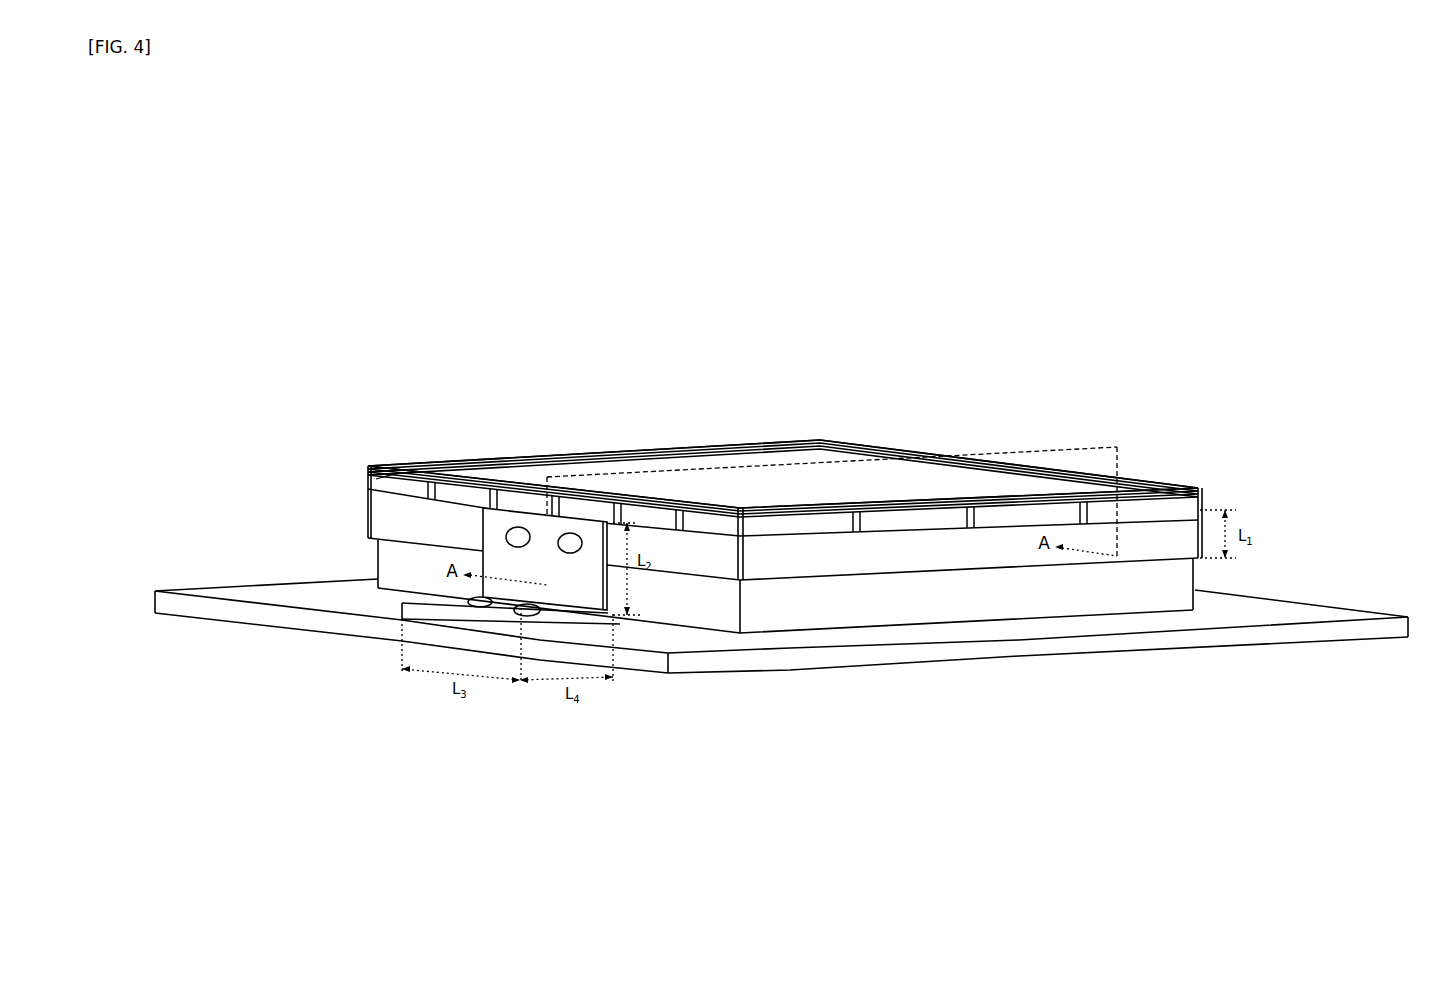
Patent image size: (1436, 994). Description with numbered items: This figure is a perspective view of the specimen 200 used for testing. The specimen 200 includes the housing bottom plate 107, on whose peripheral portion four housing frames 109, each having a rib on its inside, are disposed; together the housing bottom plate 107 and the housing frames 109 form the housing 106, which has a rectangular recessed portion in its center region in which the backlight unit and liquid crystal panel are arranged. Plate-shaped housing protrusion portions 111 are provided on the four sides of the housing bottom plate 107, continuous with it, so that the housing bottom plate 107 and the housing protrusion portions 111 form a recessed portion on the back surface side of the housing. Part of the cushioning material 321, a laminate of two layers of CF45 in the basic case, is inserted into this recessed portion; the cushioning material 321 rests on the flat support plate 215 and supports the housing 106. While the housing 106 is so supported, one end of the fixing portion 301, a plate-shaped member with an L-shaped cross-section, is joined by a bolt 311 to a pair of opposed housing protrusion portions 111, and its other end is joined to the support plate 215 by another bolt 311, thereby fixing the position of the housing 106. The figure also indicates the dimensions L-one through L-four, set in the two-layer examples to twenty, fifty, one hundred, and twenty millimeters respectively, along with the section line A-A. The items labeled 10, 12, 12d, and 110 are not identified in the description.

The display device 10 is at (745, 522).
The cover glass 12 is at (895, 482).
The display area 12d is at (823, 482).
The housing 106 is at (352, 483).
The housing bottom plate 107 is at (808, 523).
The housing frame 109 is at (442, 504).
The frame 110 is at (376, 472).
The housing protrusion portion 111 is at (1147, 548).
The specimen 200 is at (543, 556).
The support plate 215 is at (1010, 658).
The fixing portion 301 is at (493, 537).
The bolt 311 is at (480, 600).
The cushioning material 321 is at (790, 620).